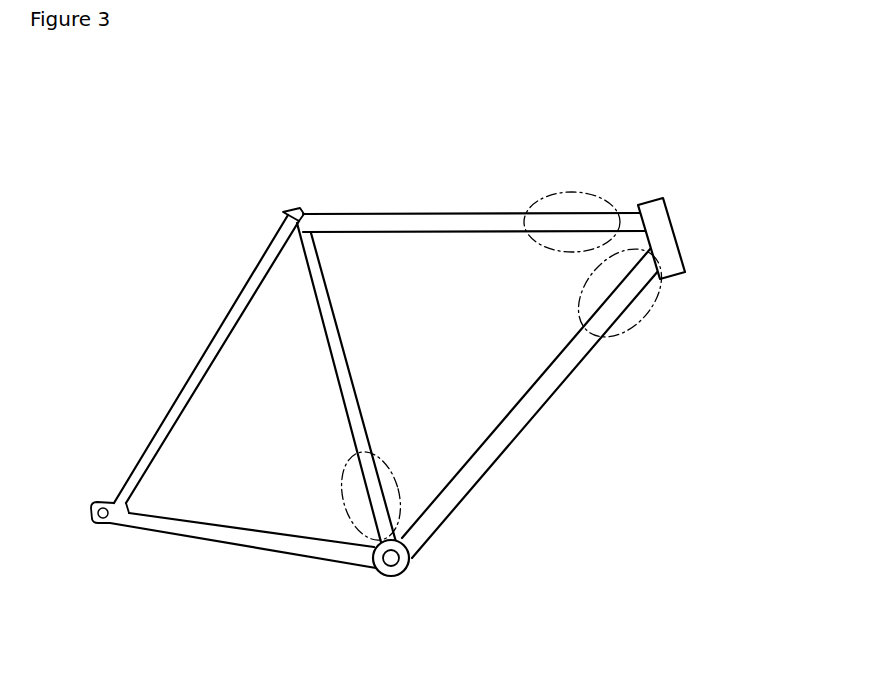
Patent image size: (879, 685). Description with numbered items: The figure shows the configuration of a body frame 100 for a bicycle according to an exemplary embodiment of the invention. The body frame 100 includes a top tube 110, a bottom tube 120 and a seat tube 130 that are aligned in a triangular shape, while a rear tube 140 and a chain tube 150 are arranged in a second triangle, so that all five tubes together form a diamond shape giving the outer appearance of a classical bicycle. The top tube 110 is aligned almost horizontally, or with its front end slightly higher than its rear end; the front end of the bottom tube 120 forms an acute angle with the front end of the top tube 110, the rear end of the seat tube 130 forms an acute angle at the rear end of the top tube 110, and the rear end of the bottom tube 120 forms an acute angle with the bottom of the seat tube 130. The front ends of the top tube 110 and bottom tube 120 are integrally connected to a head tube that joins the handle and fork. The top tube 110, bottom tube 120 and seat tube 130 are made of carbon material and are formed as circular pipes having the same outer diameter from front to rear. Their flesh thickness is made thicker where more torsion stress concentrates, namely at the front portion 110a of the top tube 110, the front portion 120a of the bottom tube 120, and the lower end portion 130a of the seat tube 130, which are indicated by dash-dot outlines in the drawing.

The body frame 100 is at (202, 217).
The top tube 110 is at (422, 220).
The front portion of the top tube 110a is at (571, 192).
The bottom tube 120 is at (535, 403).
The front portion of the bottom tube 120a is at (648, 312).
The seat tube 130 is at (326, 332).
The lower end portion of the seat tube 130a is at (404, 494).
The rear tube 140 is at (196, 388).
The chain tube 150 is at (254, 543).